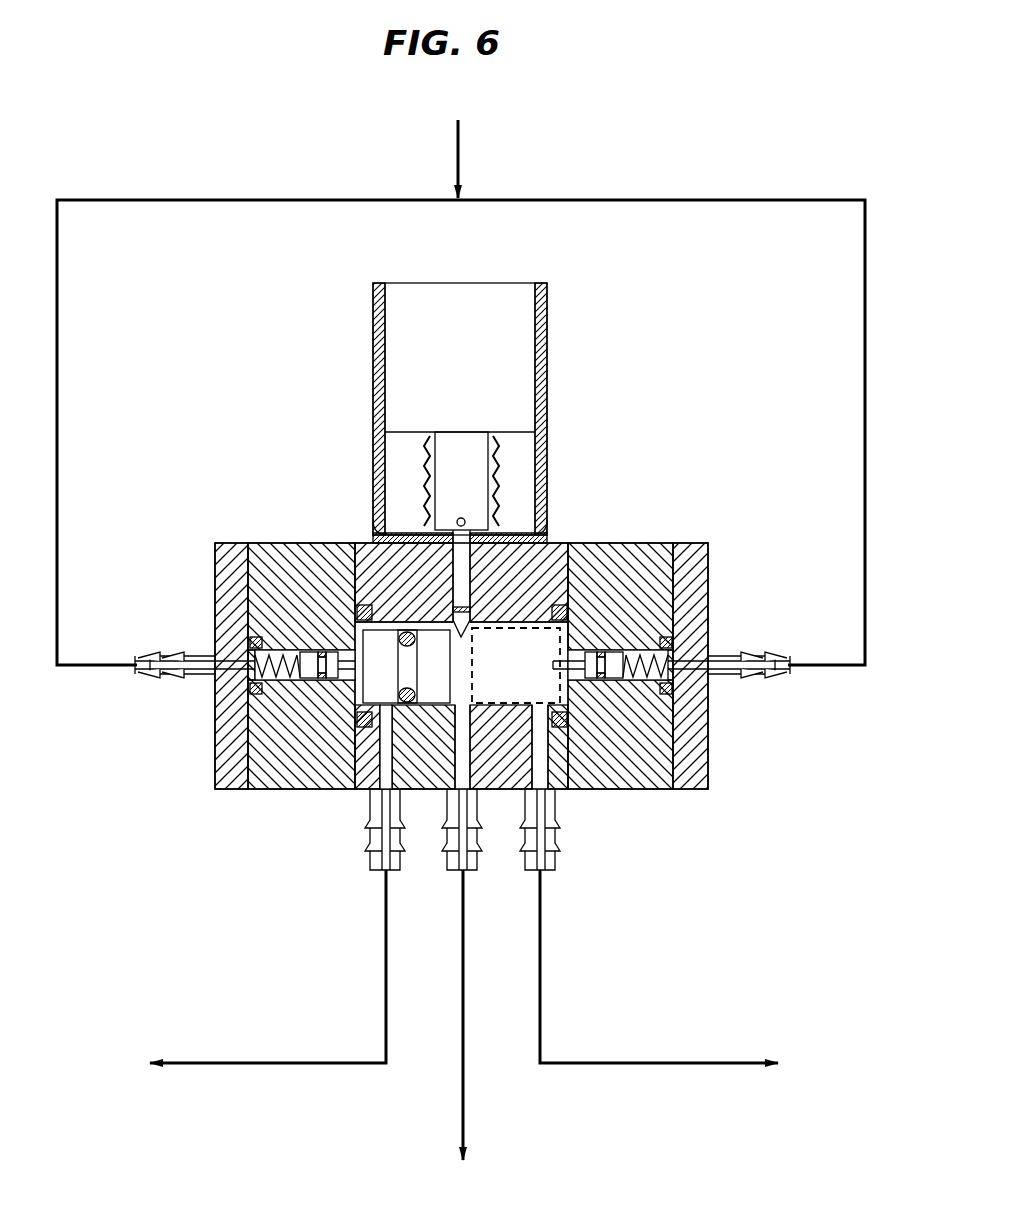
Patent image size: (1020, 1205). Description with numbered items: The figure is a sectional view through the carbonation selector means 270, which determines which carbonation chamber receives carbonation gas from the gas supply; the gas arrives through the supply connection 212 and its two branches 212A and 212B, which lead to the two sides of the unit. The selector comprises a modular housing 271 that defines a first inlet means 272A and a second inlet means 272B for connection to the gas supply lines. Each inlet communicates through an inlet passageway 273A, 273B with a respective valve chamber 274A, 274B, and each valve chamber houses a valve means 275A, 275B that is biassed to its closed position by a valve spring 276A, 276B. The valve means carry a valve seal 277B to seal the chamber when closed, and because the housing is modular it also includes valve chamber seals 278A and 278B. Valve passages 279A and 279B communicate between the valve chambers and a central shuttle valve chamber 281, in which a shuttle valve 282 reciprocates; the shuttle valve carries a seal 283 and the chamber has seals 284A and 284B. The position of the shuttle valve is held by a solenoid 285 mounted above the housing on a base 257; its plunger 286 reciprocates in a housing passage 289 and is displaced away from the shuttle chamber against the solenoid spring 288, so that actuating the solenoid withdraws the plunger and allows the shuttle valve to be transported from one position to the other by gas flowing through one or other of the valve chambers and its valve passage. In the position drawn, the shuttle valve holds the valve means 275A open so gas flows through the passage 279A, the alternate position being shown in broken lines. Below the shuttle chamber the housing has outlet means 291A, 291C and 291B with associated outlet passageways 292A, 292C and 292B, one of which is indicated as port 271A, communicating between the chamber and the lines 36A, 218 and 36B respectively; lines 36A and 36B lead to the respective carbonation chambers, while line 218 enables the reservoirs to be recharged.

The inlet line 212 is at (460, 151).
The first branch line 212A is at (57, 364).
The second branch line 212B is at (865, 364).
The solenoid 285 is at (406, 380).
The plunger 286 is at (435, 528).
The solenoid spring 288 is at (430, 436).
The cylinder base 257 is at (380, 537).
The housing passage 289 is at (472, 566).
The carbonation selector means 270 is at (200, 780).
The housing 271 is at (280, 786).
The outlet passage 271A is at (312, 715).
The shuttle valve chamber 281 is at (510, 702).
The seal 283 is at (408, 705).
The shuttle valve 282 is at (362, 612).
The chamber seal 284A is at (372, 648).
The chamber seal 284B is at (548, 714).
The valve spring 276A is at (300, 680).
The valve spring 276B is at (690, 682).
The valve means 275A is at (280, 700).
The valve means 275B is at (645, 690).
The valve chamber 274A is at (334, 700).
The valve chamber 274B is at (600, 675).
The valve chamber seal 278A is at (240, 640).
The valve chamber seal 278B is at (665, 640).
The valve passage 279A is at (322, 650).
The valve passage 279B is at (585, 645).
The valve seal 277B is at (605, 655).
The inlet passageway 273A is at (162, 655).
The inlet passageway 273B is at (770, 655).
The inlet means 272A is at (152, 678).
The inlet means 272B is at (773, 680).
The outlet means 291A is at (376, 838).
The outlet means 291B is at (550, 865).
The outlet means 291C is at (459, 868).
The outlet passageway 292A is at (380, 830).
The outlet passageway 292B is at (555, 855).
The outlet passageway 292C is at (468, 868).
The gas supply line 36A is at (228, 1063).
The gas supply line 36B is at (668, 1063).
The line 218 is at (463, 1112).